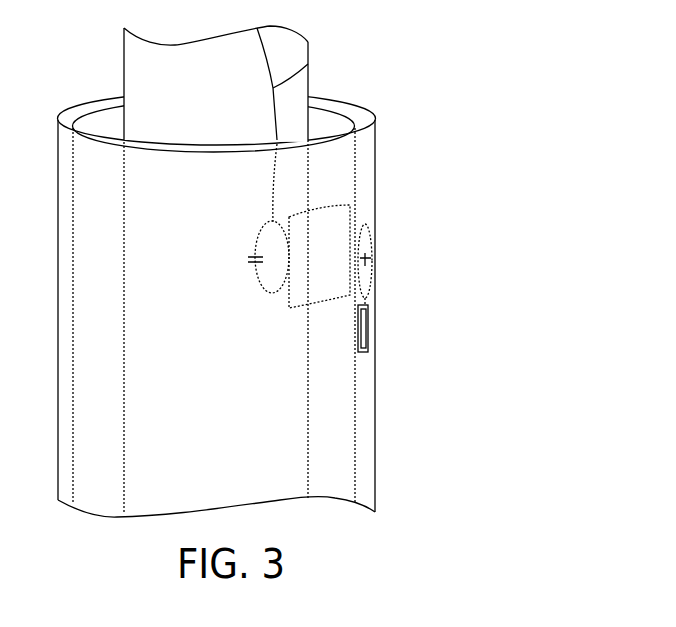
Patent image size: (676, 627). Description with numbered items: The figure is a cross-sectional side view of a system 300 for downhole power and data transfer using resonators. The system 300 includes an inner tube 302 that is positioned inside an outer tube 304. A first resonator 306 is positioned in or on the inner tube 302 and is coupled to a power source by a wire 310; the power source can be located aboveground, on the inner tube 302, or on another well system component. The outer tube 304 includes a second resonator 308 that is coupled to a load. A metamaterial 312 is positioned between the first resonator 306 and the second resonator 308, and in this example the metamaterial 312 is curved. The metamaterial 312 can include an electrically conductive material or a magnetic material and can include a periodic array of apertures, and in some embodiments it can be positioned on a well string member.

The system 300 is at (518, 52).
The inner tube 302 is at (124, 58).
The outer tube 304 is at (84, 251).
The first resonator 306 is at (273, 295).
The second resonator 308 is at (370, 275).
The wire 310 is at (305, 69).
The metamaterial 312 is at (350, 215).